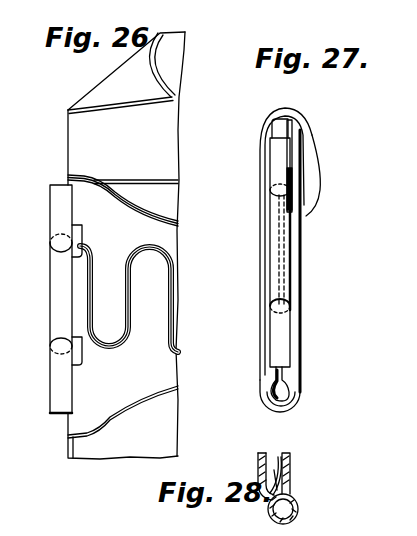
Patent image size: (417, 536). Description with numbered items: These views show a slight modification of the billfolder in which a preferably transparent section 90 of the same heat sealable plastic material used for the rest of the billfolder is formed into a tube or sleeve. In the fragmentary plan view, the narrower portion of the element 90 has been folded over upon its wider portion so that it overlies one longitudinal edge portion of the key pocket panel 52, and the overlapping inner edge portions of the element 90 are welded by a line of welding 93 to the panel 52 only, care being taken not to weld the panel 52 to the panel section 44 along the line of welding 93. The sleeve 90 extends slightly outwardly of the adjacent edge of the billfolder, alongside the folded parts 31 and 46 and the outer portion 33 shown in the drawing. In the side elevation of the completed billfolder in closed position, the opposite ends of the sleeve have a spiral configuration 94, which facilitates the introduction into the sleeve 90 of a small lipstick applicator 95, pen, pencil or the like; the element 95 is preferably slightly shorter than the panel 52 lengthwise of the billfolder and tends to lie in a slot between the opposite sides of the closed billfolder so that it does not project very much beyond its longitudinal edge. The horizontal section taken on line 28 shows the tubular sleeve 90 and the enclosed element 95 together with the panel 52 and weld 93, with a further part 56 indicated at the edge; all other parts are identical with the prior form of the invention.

In FIG. 26, the folded flap 31 is at (125, 71).
In FIG. 27, the folded flap 31 is at (320, 196).
In FIG. 26, the body panel 46 is at (88, 133).
In FIG. 26, the key pocket panel 52 is at (133, 227).
In FIG. 28, the key pocket panel 52 is at (284, 466).
In FIG. 26, the line of welding 93 is at (72, 243).
In FIG. 28, the line of welding 93 is at (286, 484).
In FIG. 26, the transparent section 90 is at (63, 302).
In FIG. 27, the transparent section 90 is at (288, 243).
In FIG. 28, the transparent section 90 is at (293, 502).
In FIG. 26, the lipstick applicator 95 is at (62, 388).
In FIG. 27, the lipstick applicator 95 is at (278, 158).
In FIG. 28, the lipstick applicator 95 is at (283, 510).
In FIG. 26, the panel section 44 is at (163, 418).
In FIG. 27, the outer layer 33 is at (263, 336).
In FIG. 28, the outer layer 33 is at (261, 468).
In FIG. 27, the spiral configuration 94 is at (287, 196).
In FIG. 27, the section line 28 is at (252, 248).
In FIG. 28, the element 56 is at (333, 535).